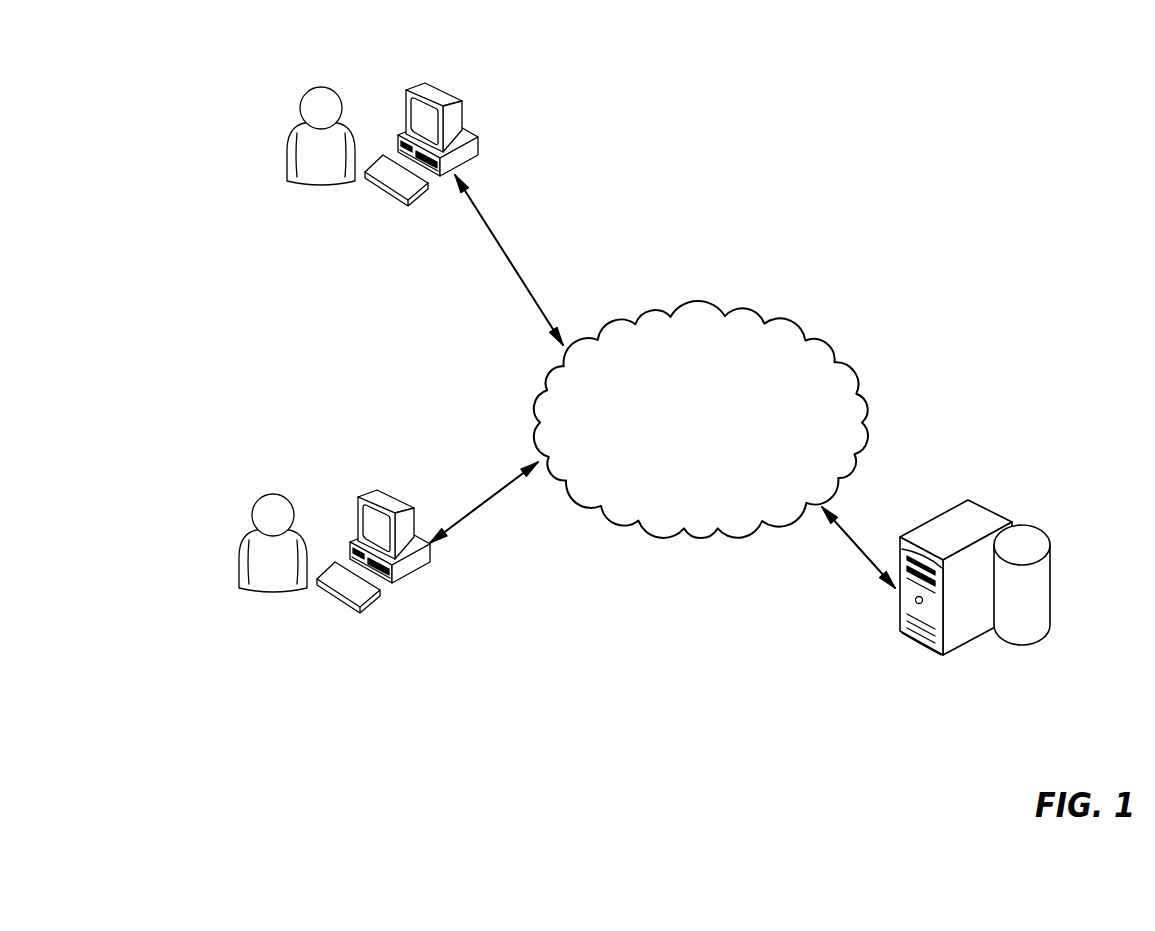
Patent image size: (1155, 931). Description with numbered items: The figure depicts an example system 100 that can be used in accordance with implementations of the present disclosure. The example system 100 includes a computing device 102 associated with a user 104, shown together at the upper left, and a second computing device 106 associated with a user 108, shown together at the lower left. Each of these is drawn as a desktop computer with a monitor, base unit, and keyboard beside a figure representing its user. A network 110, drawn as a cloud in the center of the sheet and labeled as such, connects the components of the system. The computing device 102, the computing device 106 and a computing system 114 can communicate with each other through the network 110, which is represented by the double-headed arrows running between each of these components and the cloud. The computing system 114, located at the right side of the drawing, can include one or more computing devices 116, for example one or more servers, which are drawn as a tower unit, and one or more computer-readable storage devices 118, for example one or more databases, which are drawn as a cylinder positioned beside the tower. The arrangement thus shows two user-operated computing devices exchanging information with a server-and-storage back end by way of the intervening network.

The example system 100 is at (900, 251).
The computing device 102 is at (427, 87).
The user 104 is at (297, 127).
The computing device 106 is at (378, 495).
The user 108 is at (249, 534).
The network 110 is at (701, 307).
The computing system 114 is at (990, 599).
The computing device 116 is at (988, 510).
The computer-readable storage device 118 is at (1052, 585).